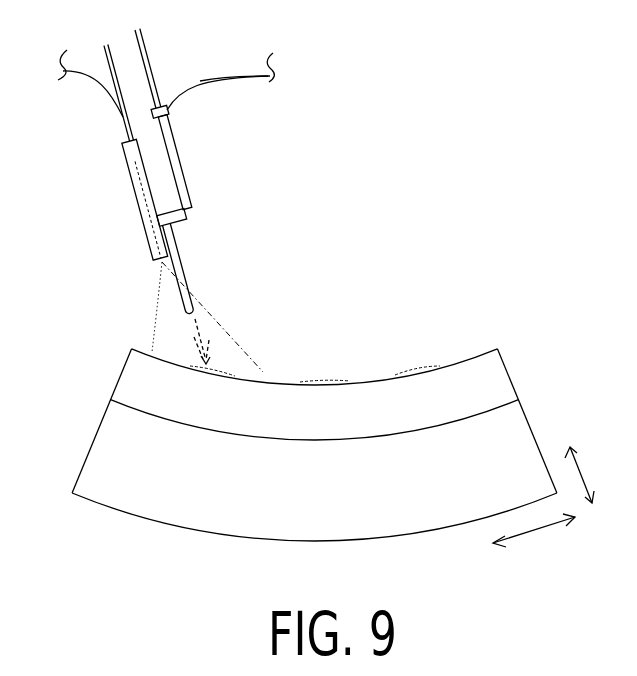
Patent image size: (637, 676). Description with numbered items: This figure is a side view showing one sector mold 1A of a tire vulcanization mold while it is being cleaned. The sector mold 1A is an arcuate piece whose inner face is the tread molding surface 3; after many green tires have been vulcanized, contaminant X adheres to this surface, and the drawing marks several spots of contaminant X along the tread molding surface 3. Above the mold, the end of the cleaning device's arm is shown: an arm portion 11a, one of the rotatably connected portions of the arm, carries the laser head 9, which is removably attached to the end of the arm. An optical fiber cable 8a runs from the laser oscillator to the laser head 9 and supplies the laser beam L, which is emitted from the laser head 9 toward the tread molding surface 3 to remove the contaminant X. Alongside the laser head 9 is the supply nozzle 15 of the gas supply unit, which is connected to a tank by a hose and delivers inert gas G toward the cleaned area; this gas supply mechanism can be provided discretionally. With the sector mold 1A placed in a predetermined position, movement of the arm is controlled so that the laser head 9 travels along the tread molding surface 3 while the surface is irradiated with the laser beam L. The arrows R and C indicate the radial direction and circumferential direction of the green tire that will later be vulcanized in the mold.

The arm portion 11a is at (138, 81).
The optical fiber cable 8a is at (203, 84).
The supply nozzle 15 is at (130, 166).
The inert gas G is at (143, 199).
The laser head 9 is at (182, 257).
The laser beam L is at (200, 333).
The sector mold 1A is at (88, 423).
The tread molding surface 3 is at (473, 350).
The contaminant X is at (220, 366).
The radial direction R is at (585, 475).
The circumferential direction C is at (534, 538).